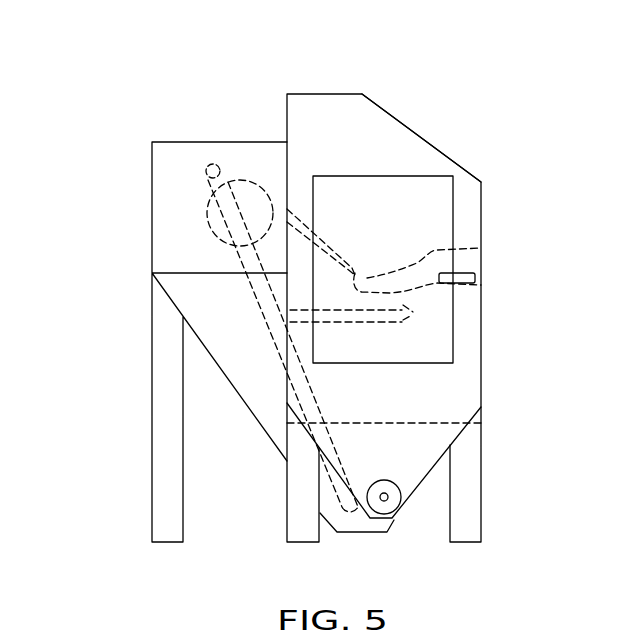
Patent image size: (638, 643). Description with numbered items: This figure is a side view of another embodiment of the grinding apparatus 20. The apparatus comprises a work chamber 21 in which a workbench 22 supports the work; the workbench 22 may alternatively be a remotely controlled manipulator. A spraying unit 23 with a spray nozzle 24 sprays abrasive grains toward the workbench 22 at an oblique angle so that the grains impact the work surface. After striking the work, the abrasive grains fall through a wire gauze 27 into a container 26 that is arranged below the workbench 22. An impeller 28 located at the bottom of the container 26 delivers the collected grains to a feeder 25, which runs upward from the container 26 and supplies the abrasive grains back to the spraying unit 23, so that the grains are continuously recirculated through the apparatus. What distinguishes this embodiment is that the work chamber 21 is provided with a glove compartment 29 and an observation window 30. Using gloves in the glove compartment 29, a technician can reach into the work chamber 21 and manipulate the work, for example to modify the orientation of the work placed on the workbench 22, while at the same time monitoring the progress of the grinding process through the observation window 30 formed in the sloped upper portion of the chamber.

The grinding apparatus 20 is at (69, 94).
The work chamber 21 is at (450, 181).
The workbench 22 is at (408, 318).
The spraying unit 23 is at (207, 211).
The spray nozzle 24 is at (340, 250).
The feeder 25 is at (250, 284).
The container 26 is at (447, 437).
The wire gauze 27 is at (438, 423).
The impeller 28 is at (395, 520).
The glove compartment 29 is at (463, 248).
The observation window 30 is at (403, 122).